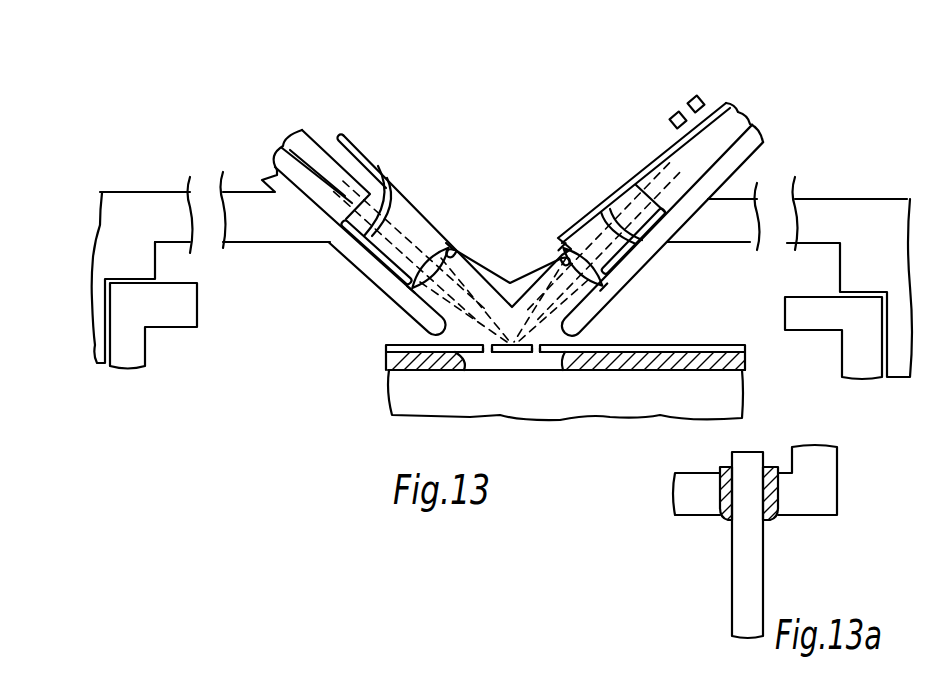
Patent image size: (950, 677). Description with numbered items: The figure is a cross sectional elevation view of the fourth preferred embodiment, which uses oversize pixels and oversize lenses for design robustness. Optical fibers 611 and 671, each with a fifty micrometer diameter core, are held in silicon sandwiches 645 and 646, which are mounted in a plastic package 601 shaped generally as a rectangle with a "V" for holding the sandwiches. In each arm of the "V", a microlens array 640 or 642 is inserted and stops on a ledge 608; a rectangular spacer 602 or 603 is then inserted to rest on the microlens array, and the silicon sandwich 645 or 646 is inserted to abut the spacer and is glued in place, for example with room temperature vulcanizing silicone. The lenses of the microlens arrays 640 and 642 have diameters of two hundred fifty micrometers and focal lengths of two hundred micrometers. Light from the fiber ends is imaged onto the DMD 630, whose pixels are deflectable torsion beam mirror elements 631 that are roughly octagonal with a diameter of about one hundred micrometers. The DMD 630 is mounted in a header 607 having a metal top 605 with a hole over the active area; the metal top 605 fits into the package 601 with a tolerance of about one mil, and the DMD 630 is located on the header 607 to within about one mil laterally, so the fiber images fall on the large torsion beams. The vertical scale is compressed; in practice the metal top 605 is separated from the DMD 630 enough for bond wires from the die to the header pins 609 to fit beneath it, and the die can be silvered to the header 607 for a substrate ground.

In FIG. 13, the plastic package 601 is at (137, 203).
In FIG. 13, the rectangular spacer 602 is at (607, 208).
In FIG. 13, the rectangular spacer 603 is at (400, 208).
In FIG. 13, the metal top 605 is at (183, 312).
In FIG. 13A, the header 607 is at (820, 477).
In FIG. 13, the ledge 608 is at (466, 248).
In FIG. 13A, the header pins 609 is at (753, 568).
In FIG. 13, the optical fiber 611 is at (715, 160).
In FIG. 13, the DMD 630 is at (598, 411).
In FIG. 13, the deflectable torsion beam mirror elements 631 is at (507, 355).
In FIG. 13, the microlens array 640 is at (585, 260).
In FIG. 13, the microlens array 642 is at (416, 285).
In FIG. 13, the silicon sandwich 645 is at (708, 115).
In FIG. 13, the silicon sandwich 646 is at (320, 150).
In FIG. 13, the optical fiber 671 is at (328, 172).